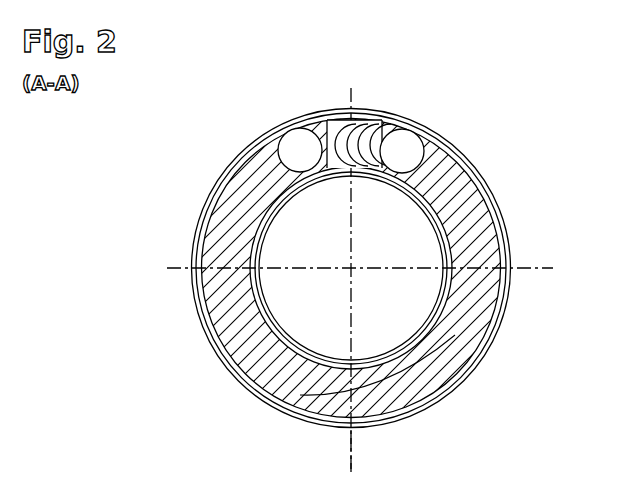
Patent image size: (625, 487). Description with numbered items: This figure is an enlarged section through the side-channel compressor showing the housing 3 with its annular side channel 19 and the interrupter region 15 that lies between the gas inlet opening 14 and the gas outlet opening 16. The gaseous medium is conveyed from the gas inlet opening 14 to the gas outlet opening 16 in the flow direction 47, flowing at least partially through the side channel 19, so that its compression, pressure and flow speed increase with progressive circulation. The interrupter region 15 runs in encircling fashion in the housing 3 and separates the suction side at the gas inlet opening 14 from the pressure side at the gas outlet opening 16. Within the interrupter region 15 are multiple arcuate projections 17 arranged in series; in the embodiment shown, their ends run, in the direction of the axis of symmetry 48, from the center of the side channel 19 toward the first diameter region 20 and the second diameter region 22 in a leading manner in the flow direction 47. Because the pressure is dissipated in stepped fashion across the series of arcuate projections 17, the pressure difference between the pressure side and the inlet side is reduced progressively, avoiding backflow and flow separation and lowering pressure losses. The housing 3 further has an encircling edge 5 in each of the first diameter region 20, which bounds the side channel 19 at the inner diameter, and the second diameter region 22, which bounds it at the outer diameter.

The housing 3 is at (481, 237).
The encircling edge 5 is at (395, 268).
The gas inlet opening 14 is at (405, 134).
The interrupter region 15 is at (330, 116).
The gas outlet opening 16 is at (302, 138).
The arcuate projections 17 is at (371, 122).
The side channel 19 is at (472, 299).
The first diameter region 20 is at (440, 323).
The second diameter region 22 is at (488, 190).
The flow direction 47 is at (250, 342).
The axis of symmetry 48 is at (350, 450).